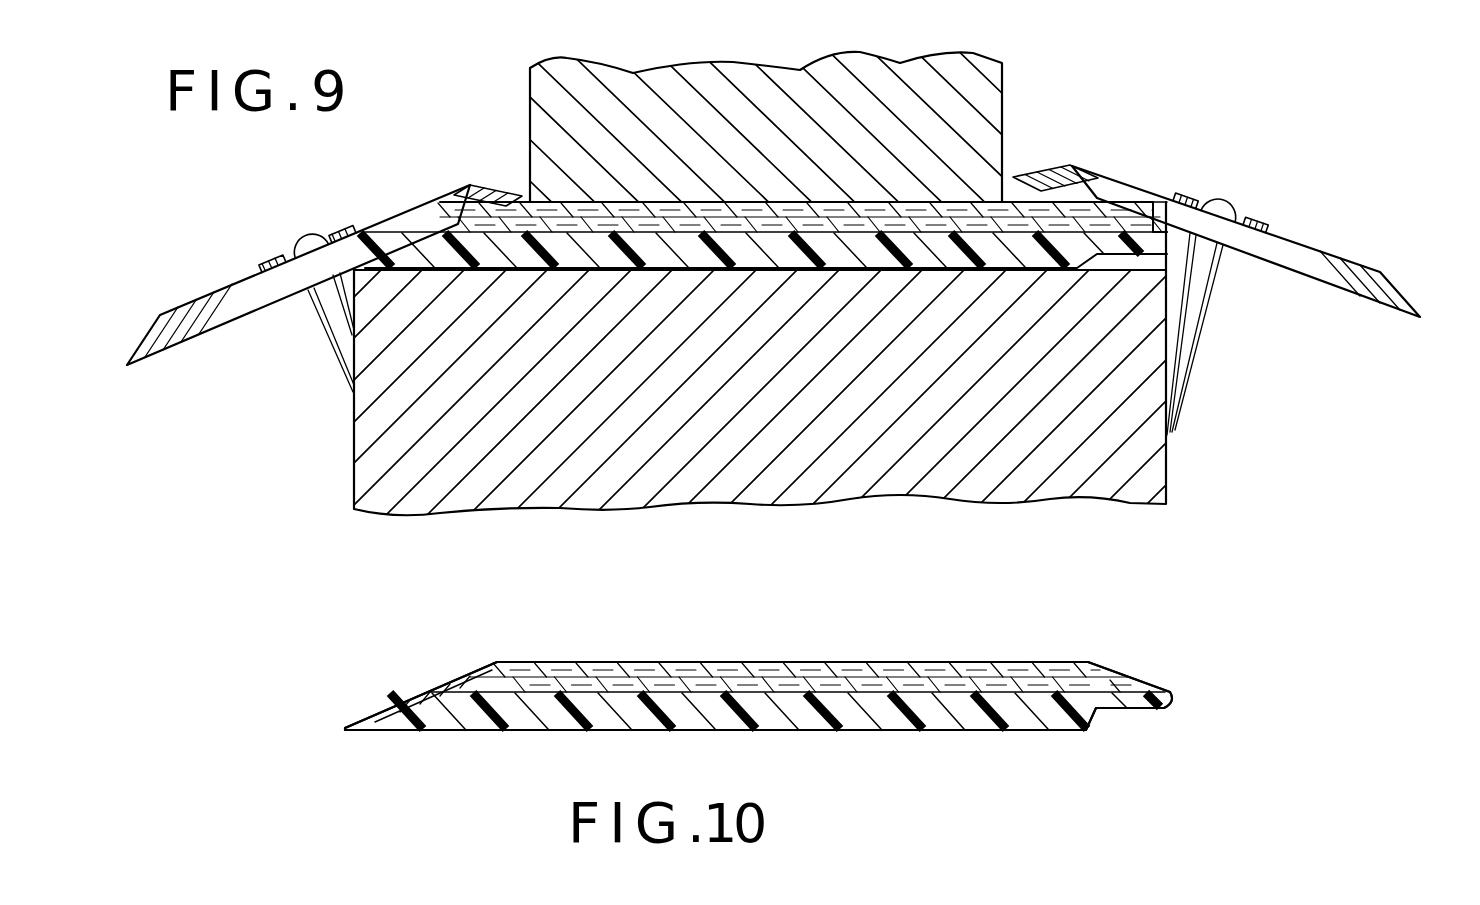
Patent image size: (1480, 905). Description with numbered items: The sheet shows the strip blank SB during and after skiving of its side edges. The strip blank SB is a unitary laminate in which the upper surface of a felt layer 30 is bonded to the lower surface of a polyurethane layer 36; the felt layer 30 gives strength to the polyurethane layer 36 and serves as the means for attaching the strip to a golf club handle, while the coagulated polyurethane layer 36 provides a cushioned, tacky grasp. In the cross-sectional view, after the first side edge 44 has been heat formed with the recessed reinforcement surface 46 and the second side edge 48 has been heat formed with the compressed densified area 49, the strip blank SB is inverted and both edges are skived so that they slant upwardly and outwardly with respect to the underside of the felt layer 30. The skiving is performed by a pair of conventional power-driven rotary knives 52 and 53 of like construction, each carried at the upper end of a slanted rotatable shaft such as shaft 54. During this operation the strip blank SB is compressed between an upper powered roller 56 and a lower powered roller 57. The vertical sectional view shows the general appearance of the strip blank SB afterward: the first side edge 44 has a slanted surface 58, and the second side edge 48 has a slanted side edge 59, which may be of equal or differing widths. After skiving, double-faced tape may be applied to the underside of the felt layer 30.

In FIG. 9, the felt layer 30 is at (1092, 194).
In FIG. 10, the felt layer 30 is at (987, 668).
In FIG. 10, the polyurethane layer 36 is at (858, 732).
In FIG. 10, the first side edge 44 is at (1176, 691).
In FIG. 10, the recessed reinforcement surface 46 is at (1128, 712).
In FIG. 10, the second side edge 48 is at (375, 718).
In FIG. 10, the compressed densified area 49 is at (396, 731).
In FIG. 9, the rotary knife 52 is at (228, 293).
In FIG. 9, the rotary knife 53 is at (1330, 262).
In FIG. 9, the slanted rotatable shaft 54 is at (338, 338).
In FIG. 9, the upper powered roller 56 is at (896, 95).
In FIG. 9, the lower powered roller 57 is at (1150, 473).
In FIG. 10, the slanted surface 58 is at (1113, 668).
In FIG. 10, the slanted side edge 59 is at (417, 702).
In FIG. 9, the strip blank SB is at (945, 200).
In FIG. 10, the strip blank SB is at (843, 660).